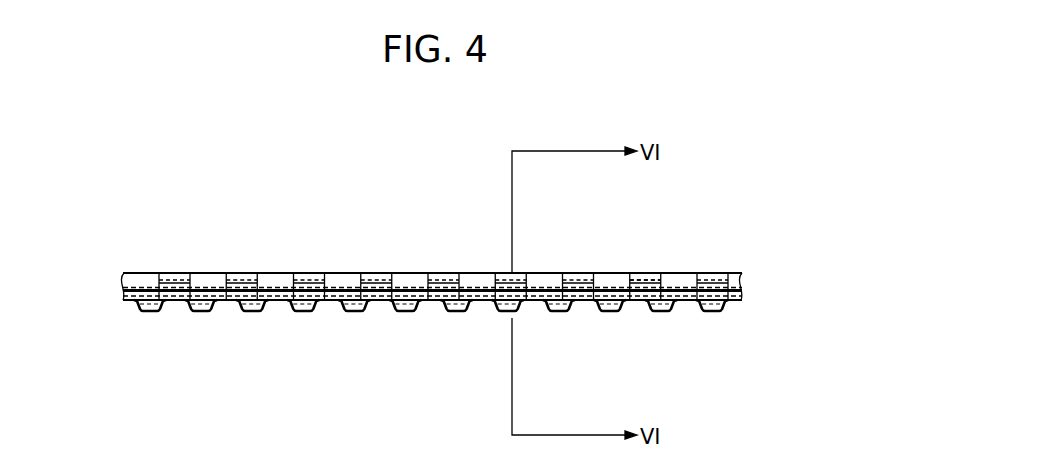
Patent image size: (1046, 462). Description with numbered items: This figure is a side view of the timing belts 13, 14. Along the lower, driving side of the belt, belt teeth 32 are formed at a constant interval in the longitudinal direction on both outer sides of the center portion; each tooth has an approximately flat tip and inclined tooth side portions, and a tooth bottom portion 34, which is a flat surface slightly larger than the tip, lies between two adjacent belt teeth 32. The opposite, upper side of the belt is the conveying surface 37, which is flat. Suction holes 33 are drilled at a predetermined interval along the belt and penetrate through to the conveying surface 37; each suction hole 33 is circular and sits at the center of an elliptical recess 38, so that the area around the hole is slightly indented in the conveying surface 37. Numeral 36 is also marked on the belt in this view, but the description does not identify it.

The timing belt 13 is at (431, 279).
The timing belt 14 is at (431, 279).
The belt tooth 32 is at (408, 312).
The suction hole 33 is at (651, 282).
The tooth bottom portion 34 is at (333, 303).
The tooth 36 is at (253, 312).
The conveying surface 37 is at (407, 272).
The recess 38 is at (640, 280).